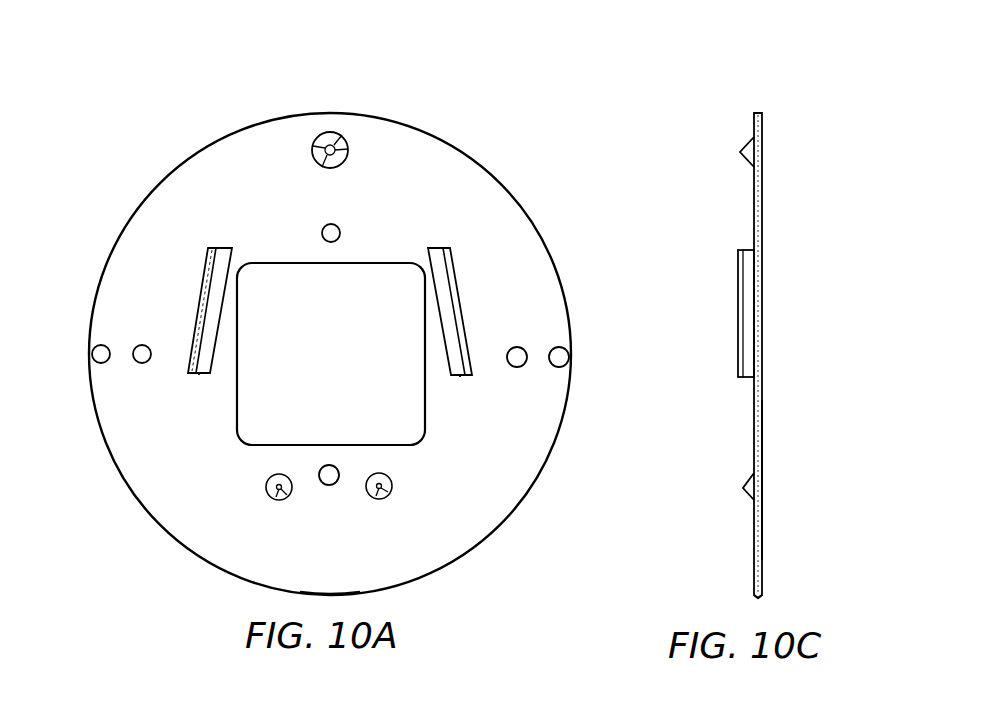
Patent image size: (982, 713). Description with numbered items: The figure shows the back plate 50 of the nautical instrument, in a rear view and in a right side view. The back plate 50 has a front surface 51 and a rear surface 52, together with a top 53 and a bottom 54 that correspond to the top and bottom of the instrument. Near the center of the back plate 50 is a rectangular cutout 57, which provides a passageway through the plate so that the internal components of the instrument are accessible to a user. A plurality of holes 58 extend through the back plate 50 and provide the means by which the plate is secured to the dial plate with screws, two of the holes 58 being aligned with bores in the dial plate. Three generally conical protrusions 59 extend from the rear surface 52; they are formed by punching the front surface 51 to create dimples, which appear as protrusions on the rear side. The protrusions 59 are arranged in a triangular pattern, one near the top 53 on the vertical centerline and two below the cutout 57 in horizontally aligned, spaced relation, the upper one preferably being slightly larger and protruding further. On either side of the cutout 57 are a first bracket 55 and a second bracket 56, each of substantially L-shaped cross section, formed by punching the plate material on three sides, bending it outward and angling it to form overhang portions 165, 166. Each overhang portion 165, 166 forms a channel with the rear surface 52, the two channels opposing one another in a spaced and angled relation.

In FIG. 10A, the back plate 50 is at (152, 118).
In FIG. 10C, the back plate 50 is at (808, 126).
In FIG. 10C, the front surface 51 is at (762, 512).
In FIG. 10A, the rear surface 52 is at (500, 215).
In FIG. 10C, the rear surface 52 is at (752, 435).
In FIG. 10A, the top 53 is at (334, 112).
In FIG. 10C, the top 53 is at (765, 110).
In FIG. 10A, the bottom 54 is at (358, 597).
In FIG. 10C, the bottom 54 is at (757, 598).
In FIG. 10A, the first bracket 55 is at (212, 250).
In FIG. 10A, the second bracket 56 is at (450, 248).
In FIG. 10C, the second bracket 56 is at (750, 312).
In FIG. 10A, the rectangular cutout 57 is at (290, 376).
In FIG. 10A, the holes 58 is at (337, 228).
In FIG. 10A, the protrusions 59 is at (347, 143).
In FIG. 10C, the protrusions 59 is at (740, 152).
In FIG. 10A, the overhang portion 165 is at (199, 375).
In FIG. 10A, the overhang portion 166 is at (460, 377).